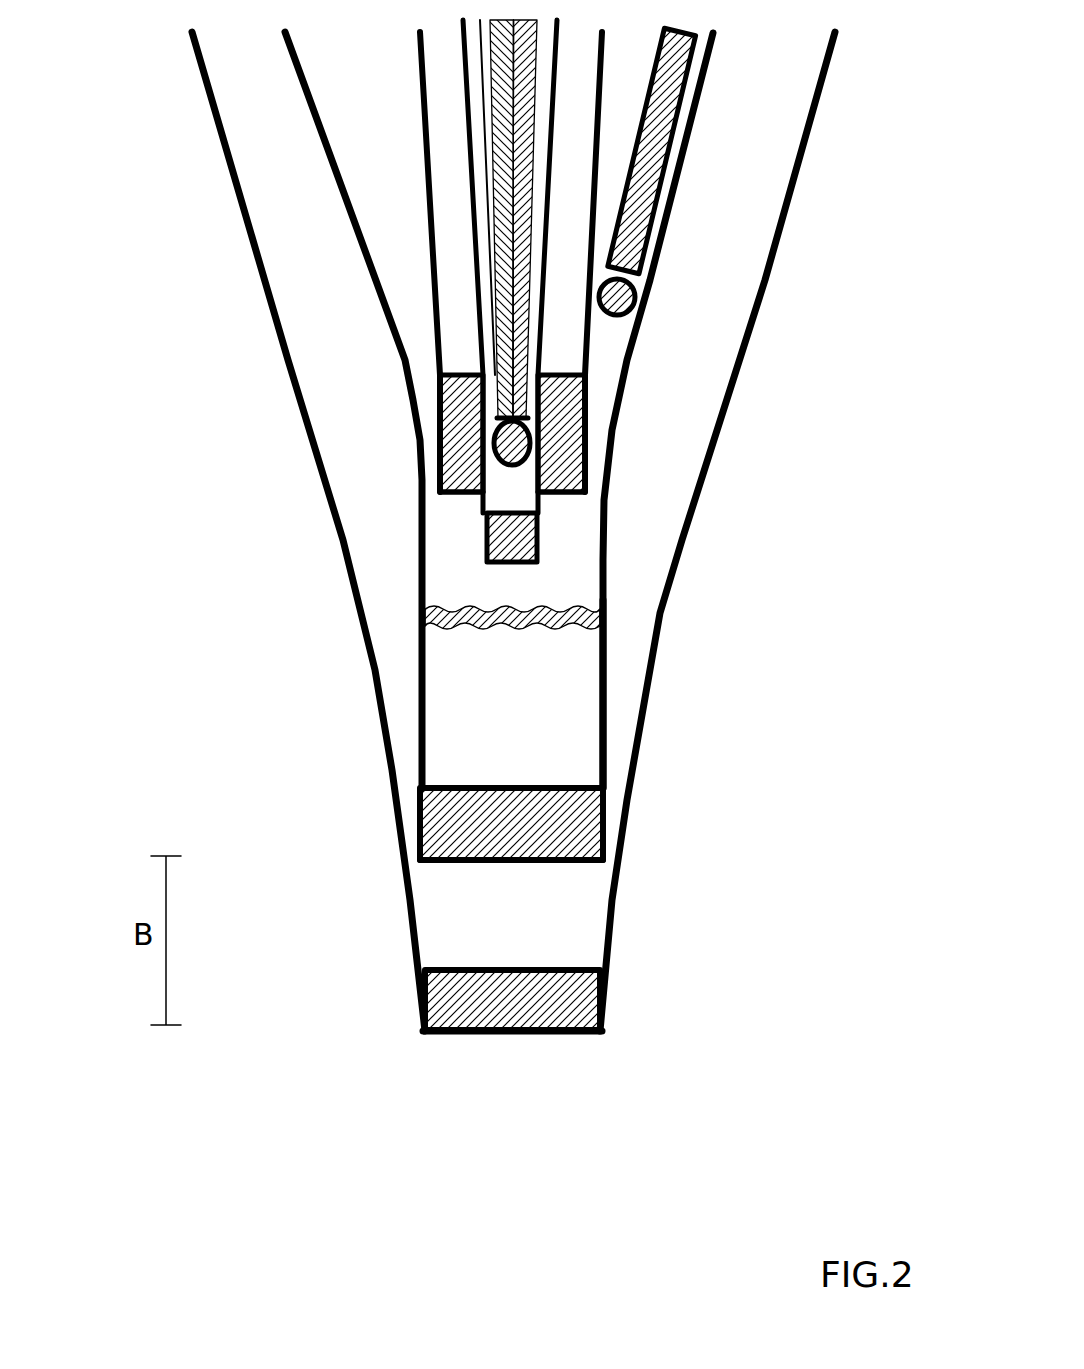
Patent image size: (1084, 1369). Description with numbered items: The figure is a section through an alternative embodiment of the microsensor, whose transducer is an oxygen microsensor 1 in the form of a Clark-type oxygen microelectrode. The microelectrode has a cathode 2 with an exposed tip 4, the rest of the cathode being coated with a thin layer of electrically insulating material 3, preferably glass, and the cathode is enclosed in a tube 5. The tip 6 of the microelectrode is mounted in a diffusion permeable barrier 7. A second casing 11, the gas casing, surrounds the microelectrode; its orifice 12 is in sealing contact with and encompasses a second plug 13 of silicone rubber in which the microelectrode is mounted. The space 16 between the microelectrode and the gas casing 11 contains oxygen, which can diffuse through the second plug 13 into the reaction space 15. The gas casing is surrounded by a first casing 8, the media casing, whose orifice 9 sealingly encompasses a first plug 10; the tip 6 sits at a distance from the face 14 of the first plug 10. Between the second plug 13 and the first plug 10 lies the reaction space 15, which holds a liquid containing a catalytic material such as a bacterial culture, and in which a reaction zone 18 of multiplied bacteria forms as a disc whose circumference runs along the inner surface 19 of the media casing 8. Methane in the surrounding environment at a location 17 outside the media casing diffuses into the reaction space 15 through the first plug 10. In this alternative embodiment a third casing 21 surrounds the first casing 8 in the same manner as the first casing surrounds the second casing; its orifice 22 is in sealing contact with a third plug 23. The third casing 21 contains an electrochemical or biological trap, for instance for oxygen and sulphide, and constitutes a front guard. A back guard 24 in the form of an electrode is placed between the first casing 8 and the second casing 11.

The oxygen microsensor 1 is at (442, 108).
The cathode 2 is at (517, 167).
The electrically insulating material 3 is at (487, 205).
The exposed tip 4 is at (515, 447).
The tube 5 is at (477, 242).
The tip 6 is at (575, 506).
The diffusion permeable barrier 7 is at (533, 543).
The first casing 8 is at (605, 690).
The orifice 9 is at (476, 937).
The first plug 10 is at (577, 832).
The second casing 11 is at (435, 317).
The orifice 12 is at (434, 511).
The second plug 13 is at (458, 422).
The face 14 is at (445, 880).
The reaction space 15 is at (533, 723).
The space 16 is at (453, 283).
The location 17 is at (480, 1150).
The reaction zone 18 is at (605, 600).
The inner surface 19 is at (582, 738).
The third casing 21 is at (617, 897).
The orifice 22 is at (574, 1050).
The third plug 23 is at (580, 998).
The back guard 24 is at (718, 93).